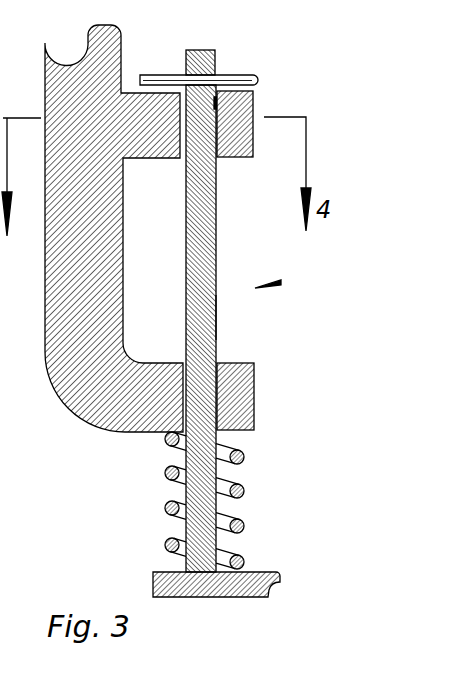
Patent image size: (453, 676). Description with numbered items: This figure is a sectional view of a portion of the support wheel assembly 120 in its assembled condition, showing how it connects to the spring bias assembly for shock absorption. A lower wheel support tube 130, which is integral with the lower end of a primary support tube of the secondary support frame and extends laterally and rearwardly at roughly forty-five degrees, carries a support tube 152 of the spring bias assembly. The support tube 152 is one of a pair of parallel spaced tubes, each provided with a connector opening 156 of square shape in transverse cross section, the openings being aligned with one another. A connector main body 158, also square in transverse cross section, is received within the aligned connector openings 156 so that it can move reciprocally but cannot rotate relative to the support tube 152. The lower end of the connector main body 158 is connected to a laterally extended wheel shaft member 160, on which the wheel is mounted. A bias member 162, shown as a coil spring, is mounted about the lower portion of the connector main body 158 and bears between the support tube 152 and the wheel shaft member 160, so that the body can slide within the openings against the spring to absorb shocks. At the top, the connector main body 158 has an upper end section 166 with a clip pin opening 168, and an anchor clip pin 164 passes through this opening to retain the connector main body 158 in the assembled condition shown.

The support wheel assembly 120 is at (288, 285).
The lower wheel support tube 130 is at (105, 207).
The support tube 152 is at (224, 158).
The connector opening 156 is at (191, 143).
The connector main body 158 is at (210, 318).
The wheel shaft member 160 is at (237, 585).
The bias member 162 is at (243, 452).
The anchor clip pin 164 is at (259, 79).
The upper end section 166 is at (217, 106).
The clip pin opening 168 is at (221, 78).